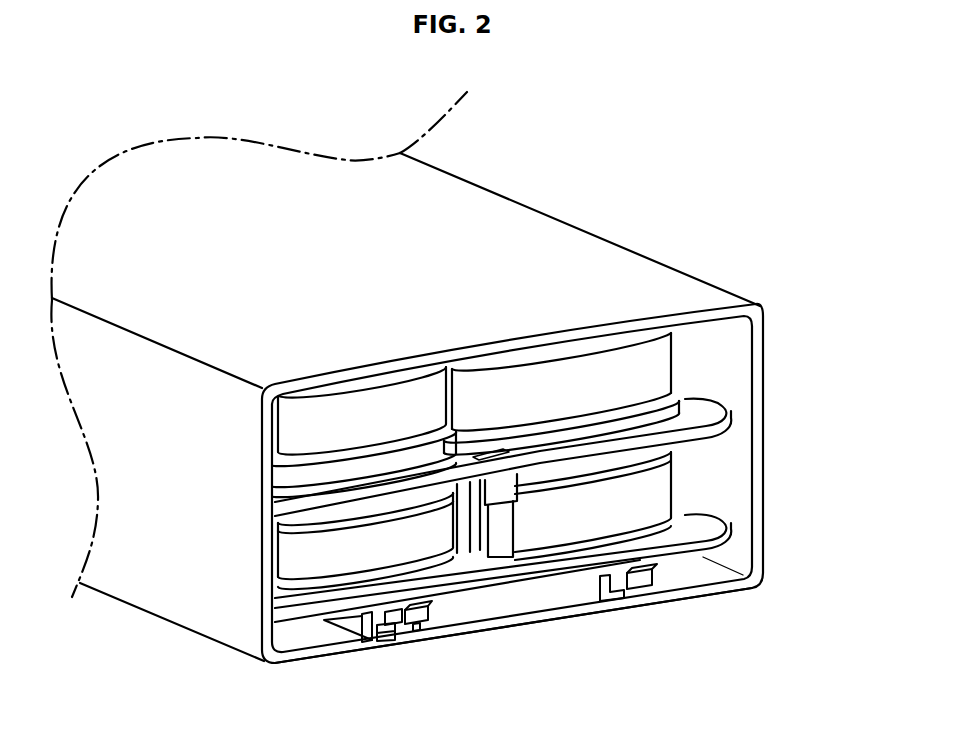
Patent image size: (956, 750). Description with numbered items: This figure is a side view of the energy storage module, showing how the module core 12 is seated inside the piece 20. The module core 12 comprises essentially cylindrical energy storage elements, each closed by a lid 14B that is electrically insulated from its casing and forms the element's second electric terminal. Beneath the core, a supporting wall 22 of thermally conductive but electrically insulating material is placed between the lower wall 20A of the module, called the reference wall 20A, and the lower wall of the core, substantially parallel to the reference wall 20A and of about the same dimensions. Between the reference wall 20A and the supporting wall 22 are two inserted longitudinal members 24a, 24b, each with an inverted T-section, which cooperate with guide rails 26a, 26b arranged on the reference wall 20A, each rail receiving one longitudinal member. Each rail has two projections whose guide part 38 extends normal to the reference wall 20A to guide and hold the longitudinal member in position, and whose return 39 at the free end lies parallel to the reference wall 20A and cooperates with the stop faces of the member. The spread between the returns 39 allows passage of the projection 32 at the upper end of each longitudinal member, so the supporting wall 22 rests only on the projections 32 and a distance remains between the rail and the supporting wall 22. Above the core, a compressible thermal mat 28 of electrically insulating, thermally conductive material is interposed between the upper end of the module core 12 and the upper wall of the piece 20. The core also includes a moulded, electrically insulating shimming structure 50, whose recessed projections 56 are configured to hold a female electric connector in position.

The module core 12 is at (758, 408).
The lid 14B is at (535, 385).
The piece 20 is at (588, 262).
The lower wall 20A is at (727, 588).
The supporting wall 22 is at (700, 532).
The longitudinal member 24a is at (618, 590).
The longitudinal member 24b is at (402, 623).
The guide rail 26a is at (642, 579).
The guide rail 26b is at (420, 618).
The thermal mat 28 is at (705, 315).
The projection 32 is at (662, 584).
The guide part 38 is at (350, 625).
The return 39 is at (388, 623).
The shimming structure 50 is at (700, 412).
The recessed projection 56 is at (500, 540).